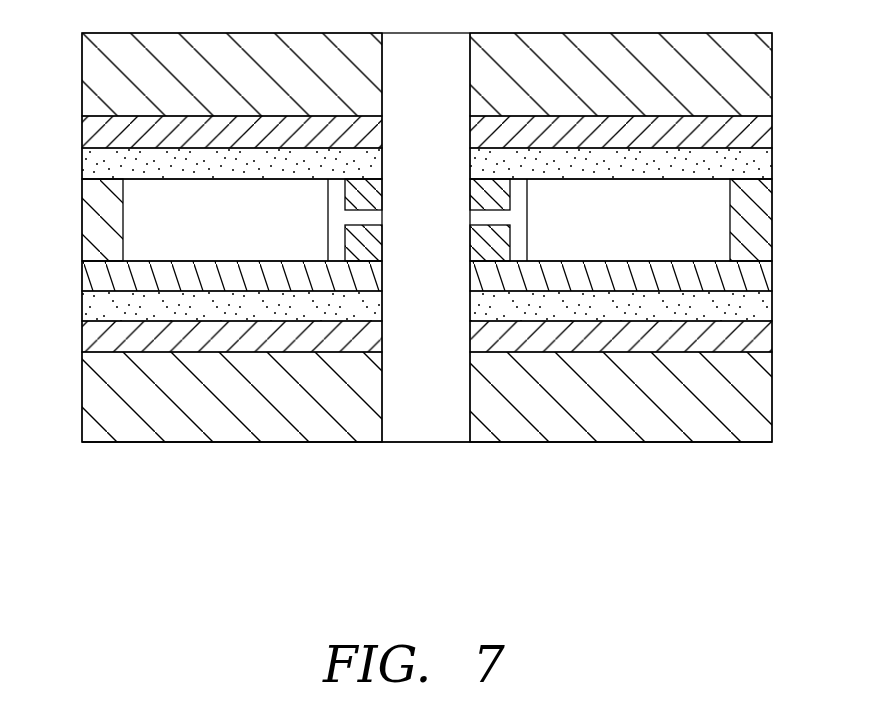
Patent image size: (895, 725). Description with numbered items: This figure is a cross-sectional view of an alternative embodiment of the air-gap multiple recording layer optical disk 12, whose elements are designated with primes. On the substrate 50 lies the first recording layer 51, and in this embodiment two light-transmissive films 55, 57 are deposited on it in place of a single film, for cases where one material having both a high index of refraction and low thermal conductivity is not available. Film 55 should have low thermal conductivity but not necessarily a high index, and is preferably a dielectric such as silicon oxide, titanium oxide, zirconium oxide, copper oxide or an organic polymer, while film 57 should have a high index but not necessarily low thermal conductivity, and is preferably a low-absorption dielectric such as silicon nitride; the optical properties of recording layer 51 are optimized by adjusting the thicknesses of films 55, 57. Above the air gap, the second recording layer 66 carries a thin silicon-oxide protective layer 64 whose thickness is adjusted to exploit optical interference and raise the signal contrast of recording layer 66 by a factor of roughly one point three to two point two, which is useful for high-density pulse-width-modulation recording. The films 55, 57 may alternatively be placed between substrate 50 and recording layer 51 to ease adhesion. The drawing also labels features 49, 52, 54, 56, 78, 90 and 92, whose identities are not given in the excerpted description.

The optical disk 12 is at (430, 287).
The lower substrate surface 49 is at (670, 442).
The substrate 50 is at (758, 388).
The first recording layer 51 is at (758, 337).
The right side wall 52 is at (760, 213).
The central channel 54 is at (484, 241).
The light-transmissive film 55 is at (758, 300).
The upper substrate 56 is at (755, 73).
The light-transmissive film 57 is at (758, 271).
The protective layer 64 is at (755, 156).
The second recording layer 66 is at (755, 128).
The left side wall 78 is at (138, 220).
The lower laminate stack 90 is at (430, 300).
The upper laminate stack 92 is at (434, 142).